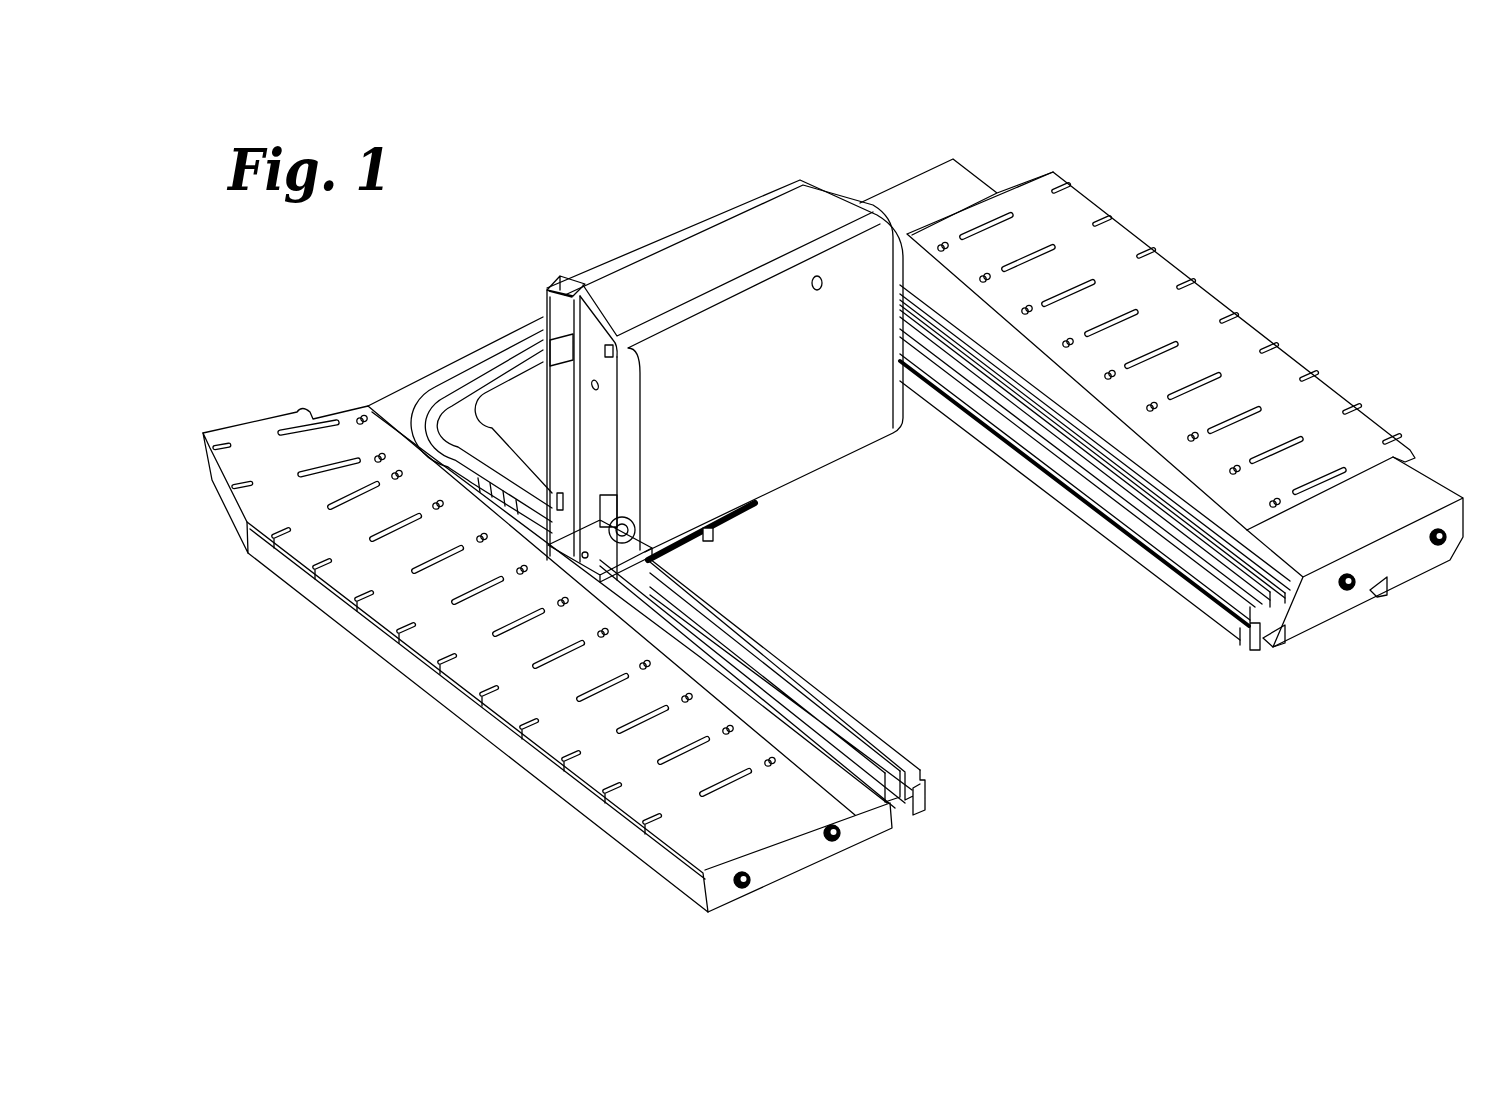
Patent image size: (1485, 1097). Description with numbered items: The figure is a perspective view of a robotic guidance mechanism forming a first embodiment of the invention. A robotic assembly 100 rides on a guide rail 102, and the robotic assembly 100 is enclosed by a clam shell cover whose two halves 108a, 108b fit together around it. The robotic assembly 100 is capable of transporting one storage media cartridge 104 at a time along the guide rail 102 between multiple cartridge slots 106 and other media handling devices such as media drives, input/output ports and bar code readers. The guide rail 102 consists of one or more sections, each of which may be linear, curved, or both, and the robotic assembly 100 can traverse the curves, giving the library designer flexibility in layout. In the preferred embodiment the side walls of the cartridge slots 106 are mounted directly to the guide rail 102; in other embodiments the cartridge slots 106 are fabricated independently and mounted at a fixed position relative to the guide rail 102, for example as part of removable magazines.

The robotic assembly 100 is at (663, 217).
The guide rail 102 is at (291, 412).
The storage media cartridge 104 is at (553, 378).
The cartridge slots 106 is at (438, 638).
The left half of clam shell cover 108a is at (805, 197).
The right half of clam shell cover 108b is at (878, 243).